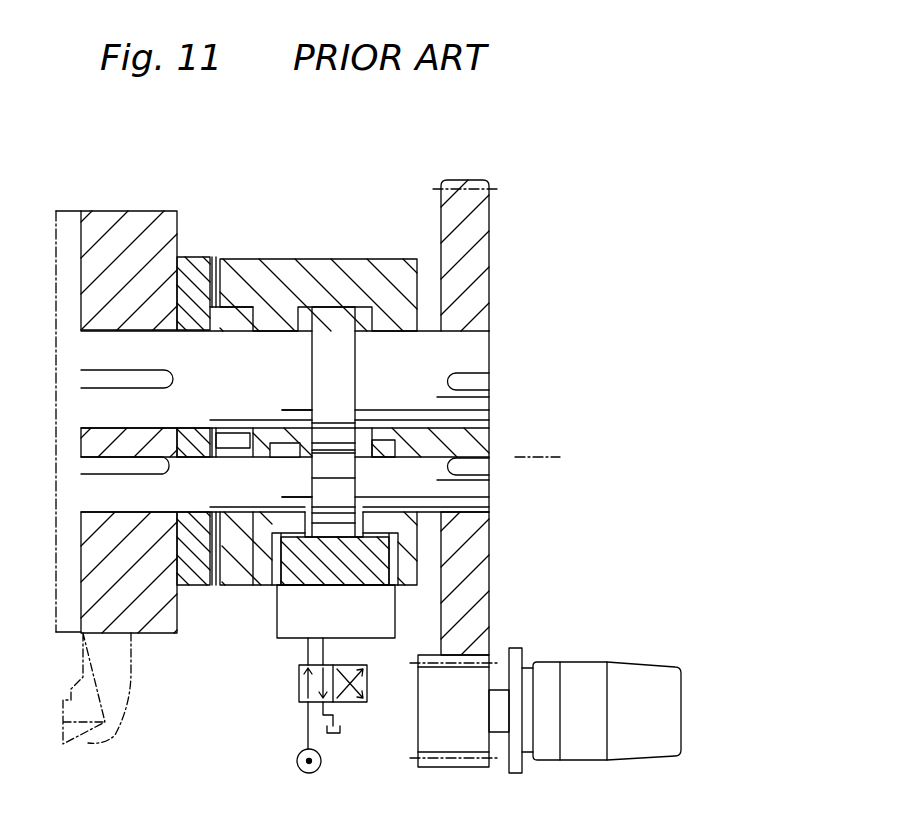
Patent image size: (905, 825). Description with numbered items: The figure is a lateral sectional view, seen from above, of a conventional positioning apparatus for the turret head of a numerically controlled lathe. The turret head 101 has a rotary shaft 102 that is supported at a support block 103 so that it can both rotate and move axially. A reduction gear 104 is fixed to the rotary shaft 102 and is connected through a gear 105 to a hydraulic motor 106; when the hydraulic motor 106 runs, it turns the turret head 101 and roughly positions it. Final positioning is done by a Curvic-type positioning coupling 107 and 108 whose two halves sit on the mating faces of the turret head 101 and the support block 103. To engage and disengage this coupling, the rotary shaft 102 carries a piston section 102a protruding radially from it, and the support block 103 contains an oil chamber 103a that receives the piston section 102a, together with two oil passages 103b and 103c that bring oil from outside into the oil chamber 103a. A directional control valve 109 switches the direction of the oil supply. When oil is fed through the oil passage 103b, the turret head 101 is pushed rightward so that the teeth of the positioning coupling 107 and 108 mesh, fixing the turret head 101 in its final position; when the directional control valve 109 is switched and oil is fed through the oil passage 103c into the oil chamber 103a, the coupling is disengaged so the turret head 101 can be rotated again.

The turret head 101 is at (147, 211).
The rotary shaft 102 is at (482, 352).
The piston section 102a is at (360, 370).
The support block 103 is at (362, 262).
The oil chamber 103a is at (313, 310).
The oil passage 103b is at (262, 587).
The oil passage 103c is at (395, 557).
The reduction gear 104 is at (485, 240).
The gear 105 is at (425, 722).
The hydraulic motor 106 is at (583, 668).
The positioning coupling 107 is at (192, 290).
The positioning coupling 108 is at (222, 285).
The directional control valve 109 is at (299, 683).